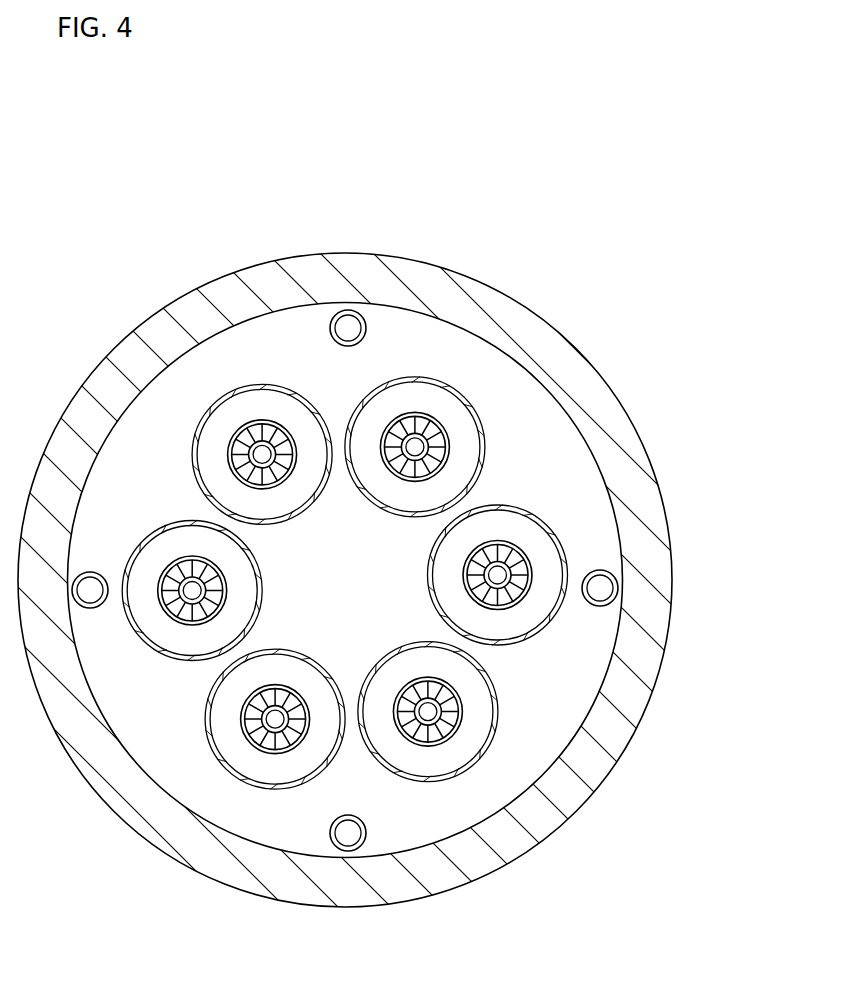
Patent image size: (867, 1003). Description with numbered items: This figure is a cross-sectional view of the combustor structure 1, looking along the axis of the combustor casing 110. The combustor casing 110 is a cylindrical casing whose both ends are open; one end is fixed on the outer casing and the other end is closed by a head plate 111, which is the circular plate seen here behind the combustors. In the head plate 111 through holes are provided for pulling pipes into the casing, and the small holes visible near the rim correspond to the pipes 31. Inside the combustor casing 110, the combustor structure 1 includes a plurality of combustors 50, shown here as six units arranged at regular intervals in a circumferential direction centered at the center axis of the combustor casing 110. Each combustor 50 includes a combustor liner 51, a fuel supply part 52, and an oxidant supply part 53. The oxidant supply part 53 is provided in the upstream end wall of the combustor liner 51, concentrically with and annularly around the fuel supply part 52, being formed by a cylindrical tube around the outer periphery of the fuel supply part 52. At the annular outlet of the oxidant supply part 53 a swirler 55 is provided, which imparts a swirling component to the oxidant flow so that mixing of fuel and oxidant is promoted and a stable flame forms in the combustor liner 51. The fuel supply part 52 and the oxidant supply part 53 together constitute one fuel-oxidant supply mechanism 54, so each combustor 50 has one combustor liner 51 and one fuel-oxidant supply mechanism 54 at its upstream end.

The combustor structure 1 is at (433, 615).
The combustor casing 110 is at (602, 414).
The head plate 111 is at (542, 728).
The pipe 31 is at (609, 574).
The combustor 50 is at (509, 404).
The combustor liner 51 is at (385, 507).
The fuel supply part 52 is at (417, 440).
The oxidant supply part 53 is at (385, 467).
The fuel-oxidant supply mechanism 54 is at (460, 452).
The swirler 55 is at (423, 467).